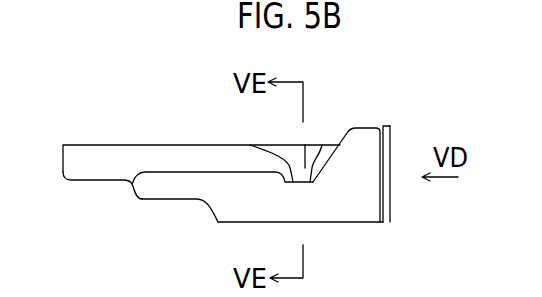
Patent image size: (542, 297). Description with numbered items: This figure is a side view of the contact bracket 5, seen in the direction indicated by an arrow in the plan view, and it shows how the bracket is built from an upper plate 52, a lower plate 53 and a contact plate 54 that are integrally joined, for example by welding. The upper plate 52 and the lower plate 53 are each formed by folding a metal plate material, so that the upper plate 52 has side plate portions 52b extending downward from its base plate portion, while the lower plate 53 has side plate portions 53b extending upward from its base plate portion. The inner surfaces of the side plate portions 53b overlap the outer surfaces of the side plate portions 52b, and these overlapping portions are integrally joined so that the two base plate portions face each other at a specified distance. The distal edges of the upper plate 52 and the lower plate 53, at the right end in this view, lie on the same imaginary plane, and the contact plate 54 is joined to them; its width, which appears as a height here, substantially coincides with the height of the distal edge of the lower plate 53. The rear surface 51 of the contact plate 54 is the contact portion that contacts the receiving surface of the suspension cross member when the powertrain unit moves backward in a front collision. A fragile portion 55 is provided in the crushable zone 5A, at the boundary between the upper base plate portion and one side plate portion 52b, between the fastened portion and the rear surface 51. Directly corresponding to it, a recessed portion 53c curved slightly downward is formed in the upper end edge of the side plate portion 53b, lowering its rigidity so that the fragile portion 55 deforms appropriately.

The contact bracket 5 is at (82, 79).
The crushable zone 5A is at (332, 135).
The rear surface of the contact plate 51 is at (390, 200).
The upper plate 52 is at (159, 137).
The side plate portion of the upper plate 52b is at (103, 172).
The lower plate 53 is at (342, 231).
The side plate portion of the lower plate 53b is at (217, 203).
The recessed portion 53c is at (256, 150).
The contact plate 54 is at (390, 160).
The fragile portion 55 is at (310, 145).